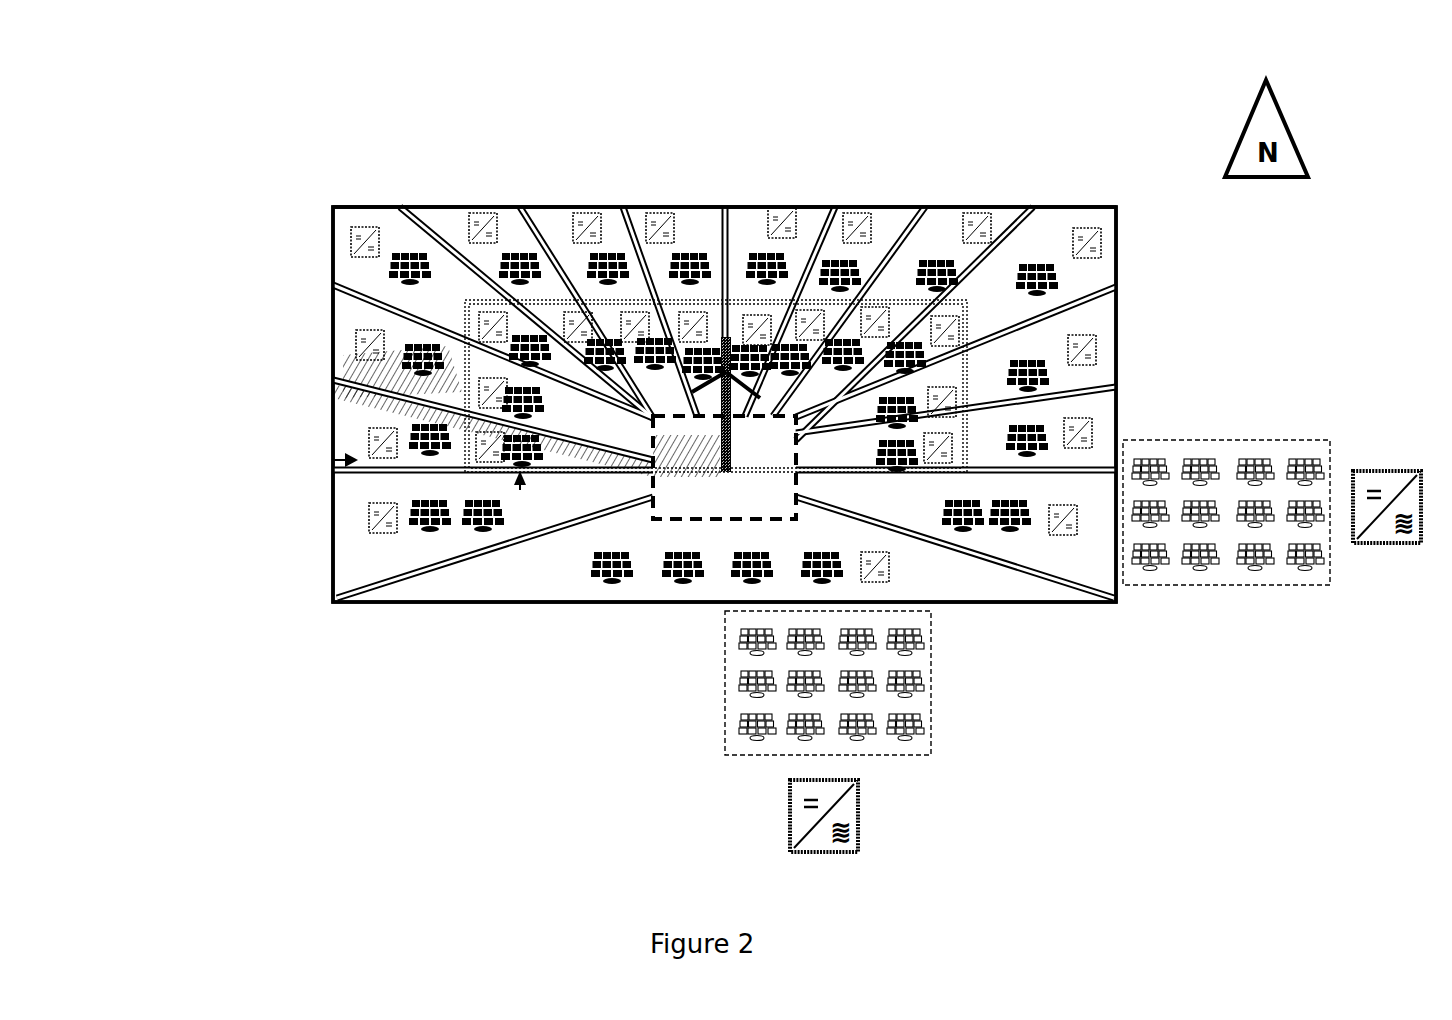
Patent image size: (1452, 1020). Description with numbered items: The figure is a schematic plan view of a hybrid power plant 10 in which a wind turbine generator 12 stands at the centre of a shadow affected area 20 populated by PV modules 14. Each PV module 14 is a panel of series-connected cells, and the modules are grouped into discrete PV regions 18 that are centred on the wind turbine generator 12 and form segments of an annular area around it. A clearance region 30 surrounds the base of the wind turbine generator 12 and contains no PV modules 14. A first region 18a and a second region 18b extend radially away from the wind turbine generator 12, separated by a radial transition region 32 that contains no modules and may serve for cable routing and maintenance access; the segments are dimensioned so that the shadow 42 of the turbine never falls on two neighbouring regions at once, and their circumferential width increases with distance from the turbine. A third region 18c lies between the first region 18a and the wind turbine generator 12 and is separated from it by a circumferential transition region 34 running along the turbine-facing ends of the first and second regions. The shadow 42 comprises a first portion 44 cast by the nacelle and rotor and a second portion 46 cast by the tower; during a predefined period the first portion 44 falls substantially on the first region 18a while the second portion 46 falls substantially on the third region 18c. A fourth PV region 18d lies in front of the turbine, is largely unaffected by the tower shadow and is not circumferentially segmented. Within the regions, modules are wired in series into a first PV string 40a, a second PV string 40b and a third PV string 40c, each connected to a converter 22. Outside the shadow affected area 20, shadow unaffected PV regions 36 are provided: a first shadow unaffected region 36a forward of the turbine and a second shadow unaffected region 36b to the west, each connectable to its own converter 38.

The hybrid power plant 10 is at (178, 146).
The wind turbine generator 12 is at (778, 437).
The PV module 14 is at (763, 248).
The PV region 18 is at (945, 212).
The first region 18a is at (340, 403).
The second region 18b is at (355, 316).
The third region 18c is at (548, 458).
The fourth PV region 18d is at (433, 552).
The shadow affected area 20 is at (555, 207).
The converter 22 is at (1007, 220).
The clearance region 30 is at (967, 392).
The transition region 32 is at (340, 386).
The circumferential transition region 34 is at (430, 535).
The shadow unaffected PV region 36 is at (725, 718).
The first shadow unaffected region 36a is at (775, 758).
The second shadow unaffected region 36b is at (1270, 440).
The converter 38 is at (858, 793).
The first PV string 40a is at (333, 460).
The second PV string 40b is at (407, 318).
The third PV string 40c is at (520, 490).
The shadow 42 is at (553, 420).
The first portion 44 is at (455, 392).
The second portion 46 is at (588, 432).